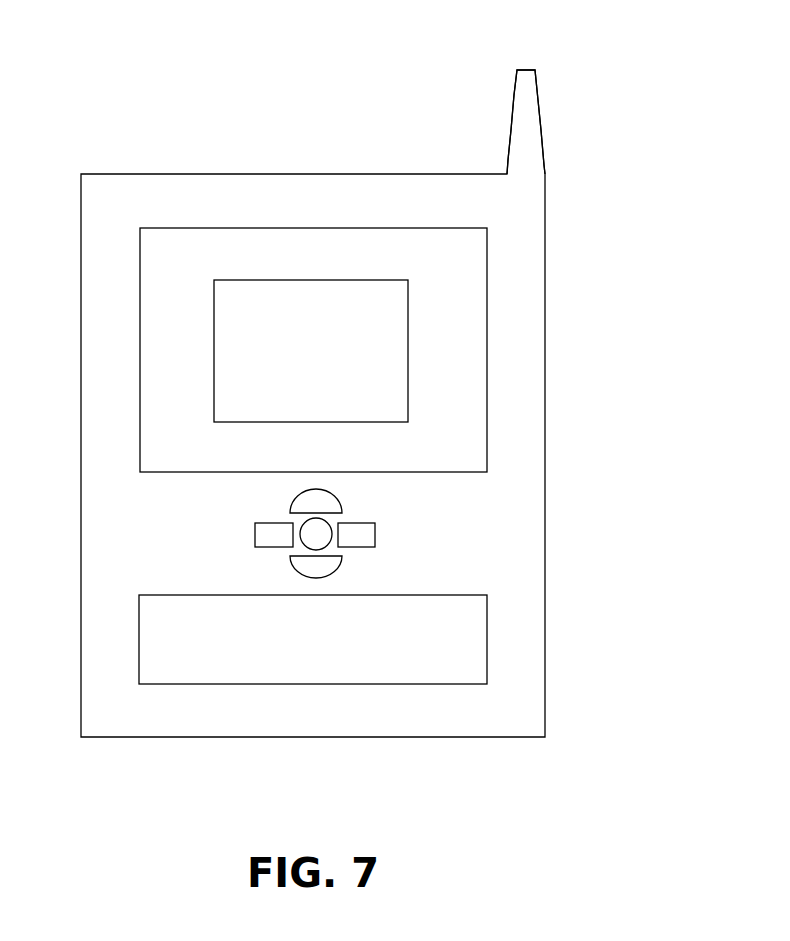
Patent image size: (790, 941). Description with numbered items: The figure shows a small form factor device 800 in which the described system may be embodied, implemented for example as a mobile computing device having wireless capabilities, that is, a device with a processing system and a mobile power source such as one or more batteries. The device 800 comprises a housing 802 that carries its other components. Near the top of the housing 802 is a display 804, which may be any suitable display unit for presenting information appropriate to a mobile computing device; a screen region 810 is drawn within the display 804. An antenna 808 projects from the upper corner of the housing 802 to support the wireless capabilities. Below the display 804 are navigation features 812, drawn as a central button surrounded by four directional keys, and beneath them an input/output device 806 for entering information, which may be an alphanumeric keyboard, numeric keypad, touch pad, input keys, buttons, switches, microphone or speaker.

The small form factor device 800 is at (156, 70).
The housing 802 is at (545, 413).
The display 804 is at (487, 243).
The input/output (I/O) device 806 is at (487, 630).
The antenna 808 is at (513, 90).
The screen 810 is at (408, 334).
The navigation features 812 is at (385, 558).